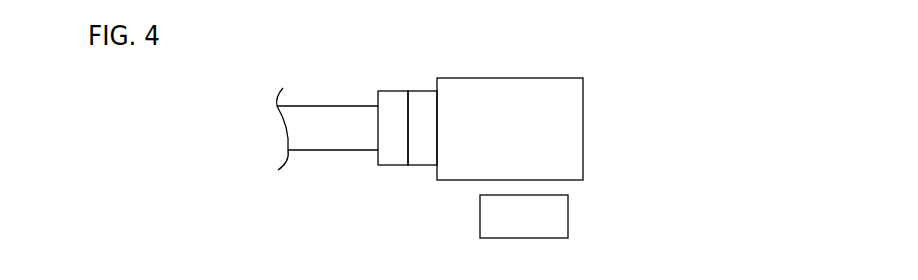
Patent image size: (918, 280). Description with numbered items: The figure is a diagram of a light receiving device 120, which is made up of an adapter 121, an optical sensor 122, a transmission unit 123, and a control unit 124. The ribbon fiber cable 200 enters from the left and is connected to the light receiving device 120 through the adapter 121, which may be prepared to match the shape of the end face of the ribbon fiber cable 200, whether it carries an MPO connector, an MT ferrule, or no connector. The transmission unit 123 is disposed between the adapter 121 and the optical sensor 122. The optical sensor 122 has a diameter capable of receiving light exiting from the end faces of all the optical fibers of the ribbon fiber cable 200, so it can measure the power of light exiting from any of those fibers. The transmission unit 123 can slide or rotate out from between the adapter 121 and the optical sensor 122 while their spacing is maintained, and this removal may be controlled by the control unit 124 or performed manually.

The light receiving device 120 is at (562, 38).
The adapter 121 is at (423, 192).
The optical sensor 122 is at (510, 129).
The transmission unit 123 is at (423, 90).
The control unit 124 is at (524, 216).
The ribbon fiber cable 200 is at (350, 151).